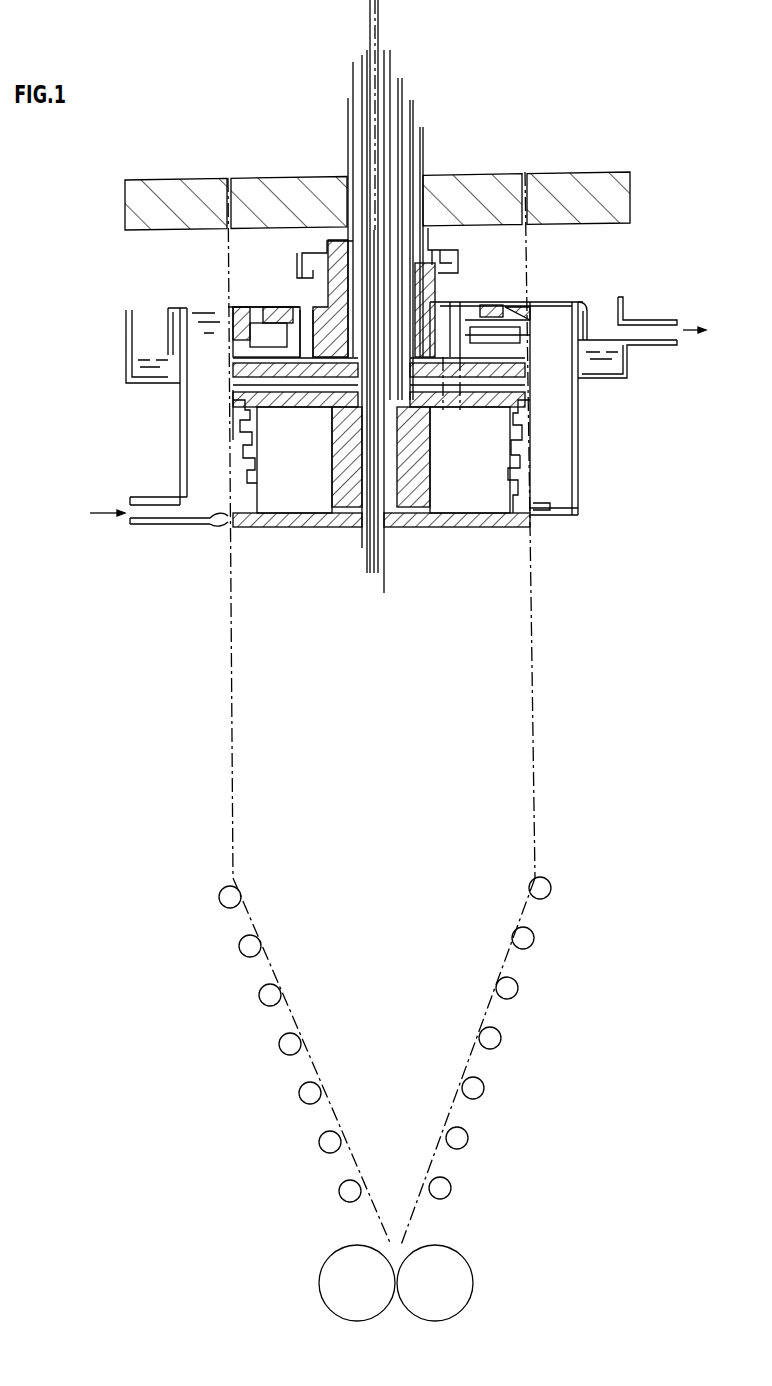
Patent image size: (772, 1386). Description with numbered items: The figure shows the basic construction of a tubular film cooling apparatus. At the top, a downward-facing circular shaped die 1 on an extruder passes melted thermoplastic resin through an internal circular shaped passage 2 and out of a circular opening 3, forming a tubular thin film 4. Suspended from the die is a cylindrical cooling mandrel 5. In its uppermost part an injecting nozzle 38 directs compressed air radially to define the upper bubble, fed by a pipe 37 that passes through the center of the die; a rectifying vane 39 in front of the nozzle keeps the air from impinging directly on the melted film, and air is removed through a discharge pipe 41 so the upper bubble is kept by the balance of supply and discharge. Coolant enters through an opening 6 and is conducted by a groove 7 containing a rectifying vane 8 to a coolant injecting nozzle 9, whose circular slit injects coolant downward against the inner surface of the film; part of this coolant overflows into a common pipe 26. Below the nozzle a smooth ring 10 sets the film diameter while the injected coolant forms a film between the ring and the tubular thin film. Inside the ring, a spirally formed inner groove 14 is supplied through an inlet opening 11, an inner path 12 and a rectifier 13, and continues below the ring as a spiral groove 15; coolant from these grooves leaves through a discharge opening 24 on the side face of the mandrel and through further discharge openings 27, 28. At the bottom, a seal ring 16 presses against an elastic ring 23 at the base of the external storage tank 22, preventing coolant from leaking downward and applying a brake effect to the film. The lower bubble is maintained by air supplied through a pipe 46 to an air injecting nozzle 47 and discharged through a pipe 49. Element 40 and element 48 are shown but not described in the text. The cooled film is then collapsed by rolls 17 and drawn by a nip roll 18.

The circular shaped die 1 is at (485, 173).
The circular shaped passage 2 is at (528, 173).
The circular opening 3 is at (535, 232).
The tubular thin film 4 is at (538, 263).
The cooling mandrel 5 is at (320, 327).
The opening for introducing the coolant 6 is at (410, 100).
The groove for the coolant 7 is at (487, 330).
The rectifying vane for the coolant 8 is at (263, 332).
The injecting nozzle for the coolant 9 is at (532, 322).
The ring for setting the diameter 10 is at (573, 402).
The opening for introducing the coolant in the spiral groove 11 is at (398, 78).
The inner path for coolant 12 is at (467, 390).
The rectifier 13 is at (492, 393).
The spirally formed inner groove 14 is at (527, 410).
The spiral groove 15 is at (527, 450).
The ring for sealing 16 is at (533, 490).
The rolls 17 is at (548, 887).
The nip roll 18 is at (462, 1252).
The external storage tank 22 is at (177, 475).
The elastic ring 23 is at (218, 525).
The coolant discharge opening 24 is at (527, 470).
The common pipe for discharging 26 is at (452, 302).
The additional discharge opening 27 is at (437, 507).
The opening for discharging the coolant 28 is at (388, 48).
The pipe for introducing the compressed air for the upper bubble 37 is at (420, 127).
The injecting nozzle for injecting compressed air 38 is at (442, 250).
The rectifying vane 39 is at (448, 253).
The bracket 40 is at (325, 243).
The pipe for discharging the compressed air for upper bubble 41 is at (348, 98).
The pipe for introducing the compressed air for lower bubble 46 is at (367, 48).
The air injecting nozzle for the lower bubble 47 is at (368, 578).
The tube end 48 is at (357, 550).
The pipe for discharging the compressed air for the lower bubble 49 is at (353, 62).